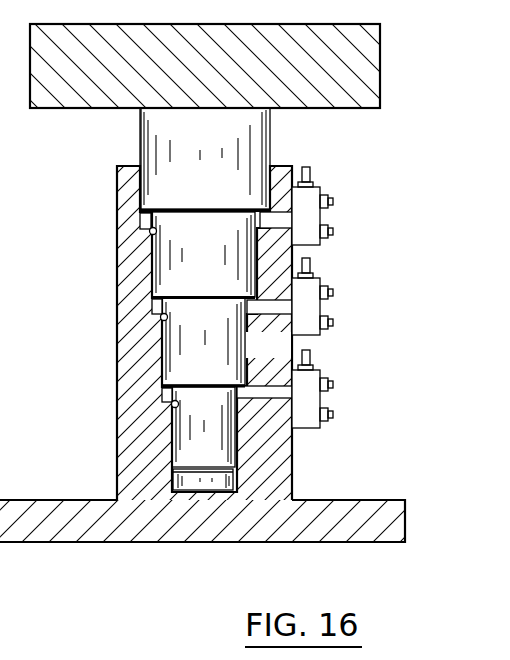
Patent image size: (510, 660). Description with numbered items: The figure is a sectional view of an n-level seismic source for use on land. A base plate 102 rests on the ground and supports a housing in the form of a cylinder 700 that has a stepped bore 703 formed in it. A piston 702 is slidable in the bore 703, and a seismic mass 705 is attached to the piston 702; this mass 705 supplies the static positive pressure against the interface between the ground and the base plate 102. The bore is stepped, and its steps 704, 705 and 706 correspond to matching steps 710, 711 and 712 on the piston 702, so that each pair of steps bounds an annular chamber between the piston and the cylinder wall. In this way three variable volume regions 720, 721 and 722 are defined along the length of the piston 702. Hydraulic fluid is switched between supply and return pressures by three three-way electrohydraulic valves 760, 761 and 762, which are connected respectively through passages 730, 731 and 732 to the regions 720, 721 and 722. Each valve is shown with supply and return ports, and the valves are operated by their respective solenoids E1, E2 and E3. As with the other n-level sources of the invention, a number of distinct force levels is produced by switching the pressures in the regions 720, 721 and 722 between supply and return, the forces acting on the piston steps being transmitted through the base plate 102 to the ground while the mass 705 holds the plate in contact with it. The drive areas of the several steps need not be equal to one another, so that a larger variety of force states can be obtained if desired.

The seismic mass 705 is at (383, 68).
The base plate 102 is at (218, 541).
The cylinder 700 is at (118, 180).
The piston 702 is at (140, 146).
The stepped bore 703 is at (143, 183).
The bore step 706 is at (147, 242).
The bore step 704 is at (118, 452).
The piston step 712 is at (140, 221).
The variable volume region 722 is at (150, 233).
The piston step 711 is at (152, 308).
The variable volume region 721 is at (161, 320).
The piston step 710 is at (163, 394).
The variable volume region 720 is at (172, 407).
The passage 732 is at (284, 188).
The passage 731 is at (258, 318).
The passage 730 is at (278, 400).
The three-way electrohydraulic valve 762 is at (322, 190).
The three-way electrohydraulic valve 761 is at (322, 280).
The three-way electrohydraulic valve 760 is at (322, 371).
The solenoid E1 is at (312, 172).
The solenoid E2 is at (311, 264).
The solenoid E3 is at (311, 356).